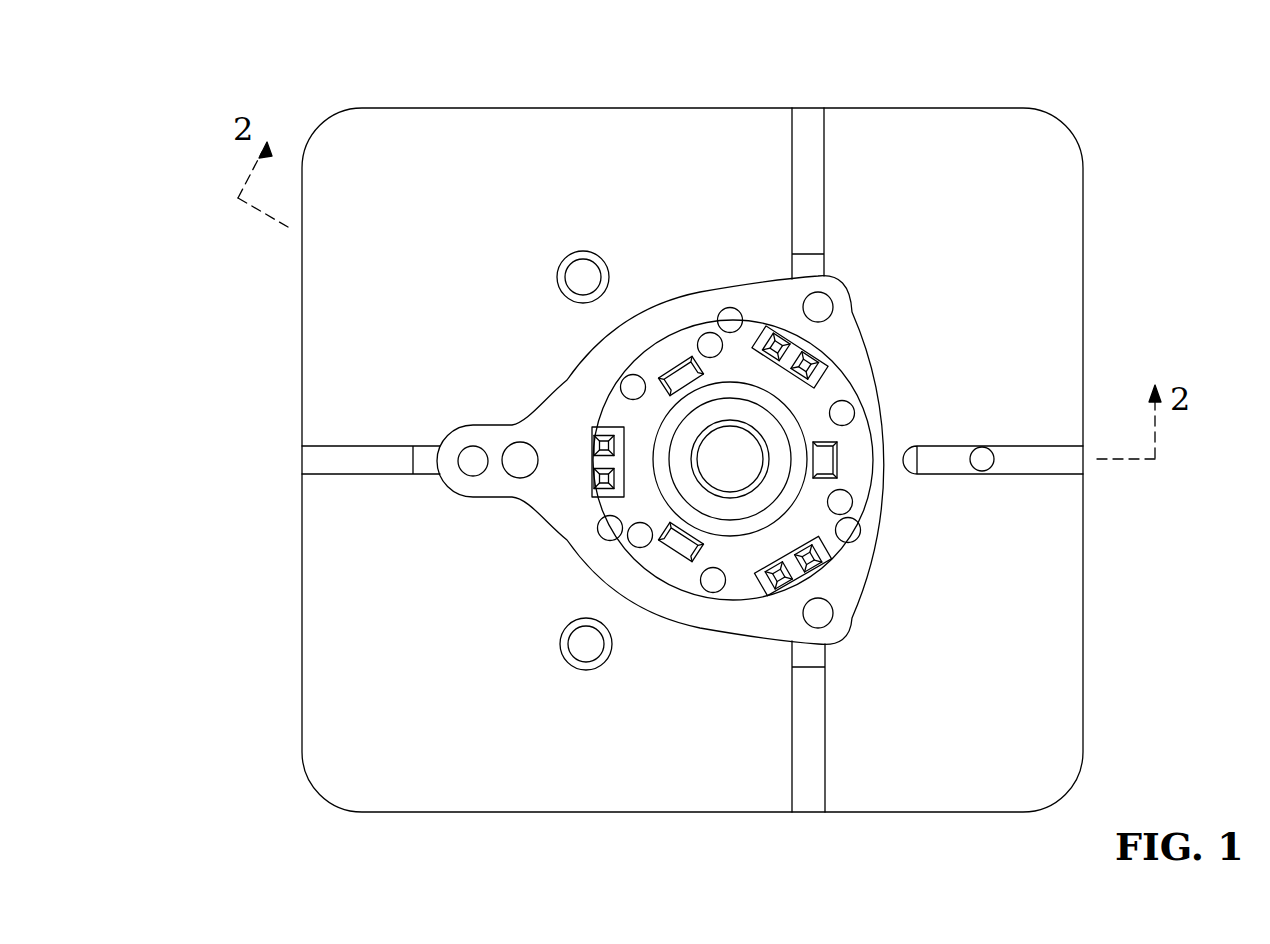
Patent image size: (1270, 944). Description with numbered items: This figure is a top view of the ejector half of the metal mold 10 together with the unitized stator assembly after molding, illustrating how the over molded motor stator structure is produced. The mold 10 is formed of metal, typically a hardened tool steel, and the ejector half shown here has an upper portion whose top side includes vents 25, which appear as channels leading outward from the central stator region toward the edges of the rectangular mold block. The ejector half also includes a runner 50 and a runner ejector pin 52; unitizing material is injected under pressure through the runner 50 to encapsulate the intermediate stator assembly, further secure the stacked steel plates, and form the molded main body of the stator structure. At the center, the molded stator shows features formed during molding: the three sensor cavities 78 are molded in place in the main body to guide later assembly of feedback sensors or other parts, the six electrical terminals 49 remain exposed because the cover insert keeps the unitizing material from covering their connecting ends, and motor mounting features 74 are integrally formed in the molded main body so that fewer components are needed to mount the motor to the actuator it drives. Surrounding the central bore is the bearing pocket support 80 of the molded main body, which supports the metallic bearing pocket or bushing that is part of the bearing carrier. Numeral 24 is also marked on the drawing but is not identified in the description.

The metal mold 10 is at (148, 184).
The mounting hole 24 is at (583, 262).
The vents 25 is at (814, 122).
The electrical terminals 49 is at (778, 345).
The runner 50 is at (942, 470).
The runner ejector pin 52 is at (982, 468).
The motor mounting features 74 is at (822, 300).
The sensor cavities 78 is at (683, 372).
The bearing pocket support 80 is at (778, 510).